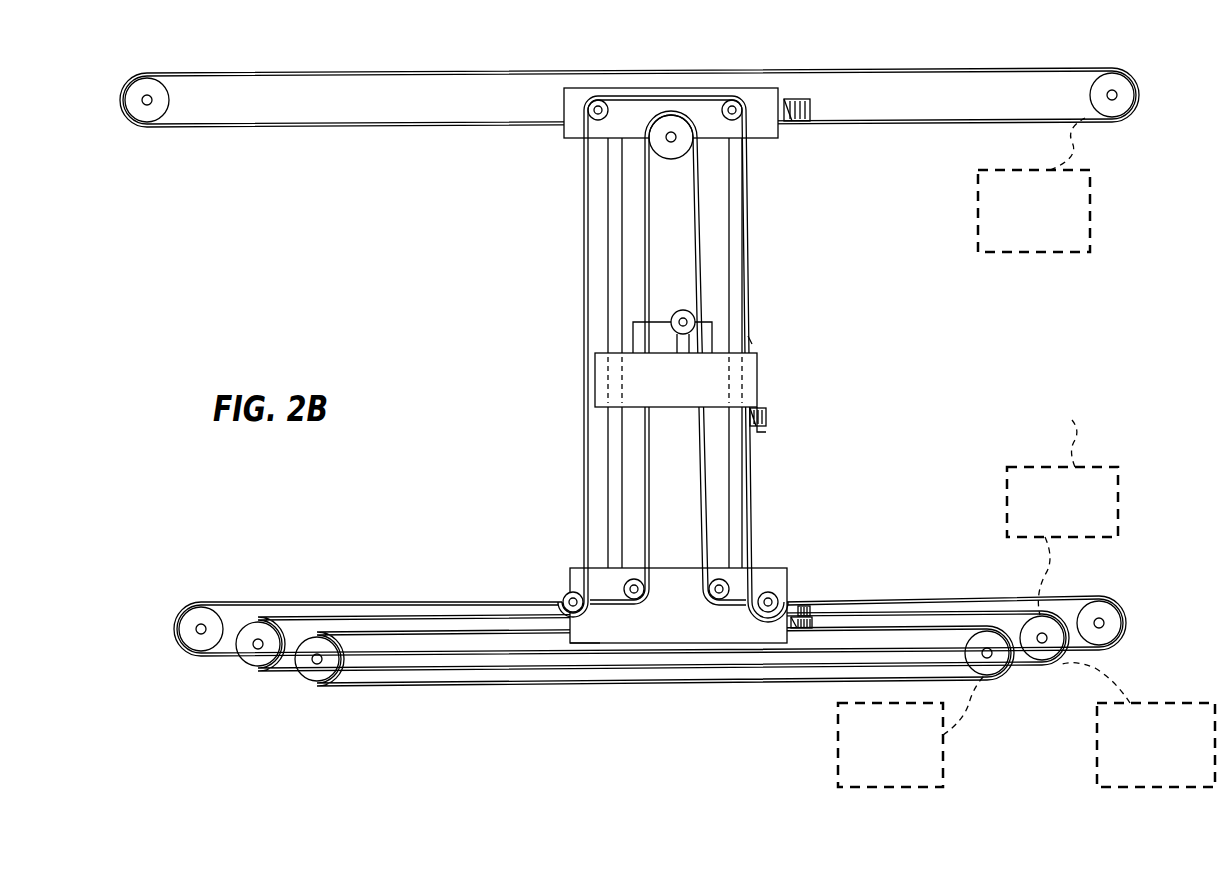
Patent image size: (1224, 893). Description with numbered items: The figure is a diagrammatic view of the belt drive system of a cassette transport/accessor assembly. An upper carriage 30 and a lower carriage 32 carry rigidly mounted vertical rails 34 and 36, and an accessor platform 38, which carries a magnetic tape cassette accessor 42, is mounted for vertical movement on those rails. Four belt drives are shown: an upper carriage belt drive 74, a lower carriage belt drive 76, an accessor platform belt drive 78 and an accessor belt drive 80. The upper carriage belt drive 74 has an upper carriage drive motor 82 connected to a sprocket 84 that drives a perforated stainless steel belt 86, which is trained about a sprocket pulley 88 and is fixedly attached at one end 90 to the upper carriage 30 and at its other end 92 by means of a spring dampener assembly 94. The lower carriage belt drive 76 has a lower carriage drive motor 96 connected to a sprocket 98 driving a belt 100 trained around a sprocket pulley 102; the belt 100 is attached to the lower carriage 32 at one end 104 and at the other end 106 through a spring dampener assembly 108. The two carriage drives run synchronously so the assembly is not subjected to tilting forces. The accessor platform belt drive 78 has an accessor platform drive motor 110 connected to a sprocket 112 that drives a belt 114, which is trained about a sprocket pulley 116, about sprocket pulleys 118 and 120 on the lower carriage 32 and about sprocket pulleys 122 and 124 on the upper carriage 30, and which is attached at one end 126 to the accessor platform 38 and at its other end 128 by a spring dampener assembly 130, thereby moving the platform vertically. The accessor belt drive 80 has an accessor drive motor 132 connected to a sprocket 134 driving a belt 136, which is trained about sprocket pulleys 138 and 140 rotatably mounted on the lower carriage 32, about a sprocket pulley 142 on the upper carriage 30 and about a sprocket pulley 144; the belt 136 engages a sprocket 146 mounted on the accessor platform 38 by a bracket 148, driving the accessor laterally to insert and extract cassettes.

The upper carriage 30 is at (679, 124).
The lower carriage 32 is at (598, 650).
The vertical rail 34 is at (750, 218).
The vertical rail 36 is at (606, 284).
The accessor platform 38 is at (594, 380).
The magnetic tape cassette accessor 42 is at (648, 328).
The upper carriage belt drive 74 is at (936, 66).
The lower carriage belt drive 76 is at (745, 681).
The accessor platform belt drive 78 is at (1132, 662).
The accessor belt drive 80 is at (1124, 506).
The upper carriage drive motor 82 is at (1090, 207).
The sprocket 84 is at (1126, 82).
The perforated stainless steel belt 86 is at (815, 70).
The sprocket pulley 88 is at (133, 95).
The belt end 90 is at (560, 110).
The belt end 92 is at (812, 111).
The spring dampener assembly 94 is at (802, 128).
The lower carriage drive motor 96 is at (838, 748).
The sprocket 98 is at (990, 668).
The perforated stainless steel belt 100 is at (425, 688).
The sprocket pulley 102 is at (314, 682).
The belt end 104 is at (565, 643).
The belt end 106 is at (798, 641).
The spring dampener assembly 108 is at (811, 606).
The accessor platform drive motor 110 is at (1097, 763).
The sprocket 112 is at (985, 595).
The perforated stainless steel belt 114 is at (752, 300).
The sprocket pulley 116 is at (250, 662).
The sprocket pulley 118 is at (570, 592).
The sprocket pulley 120 is at (770, 592).
The sprocket pulley 122 is at (598, 101).
The sprocket pulley 124 is at (732, 100).
The belt end 126 is at (760, 340).
The belt end 128 is at (762, 440).
The spring dampener assembly 130 is at (770, 417).
The accessor drive motor 132 is at (1075, 432).
The sprocket 134 is at (1104, 600).
The perforated stainless steel belt 136 is at (1022, 616).
The sprocket pulley 138 is at (636, 605).
The sprocket pulley 140 is at (717, 605).
The sprocket pulley 142 is at (660, 136).
The sprocket pulley 144 is at (201, 614).
The sprocket 146 is at (683, 310).
The bracket 148 is at (672, 346).